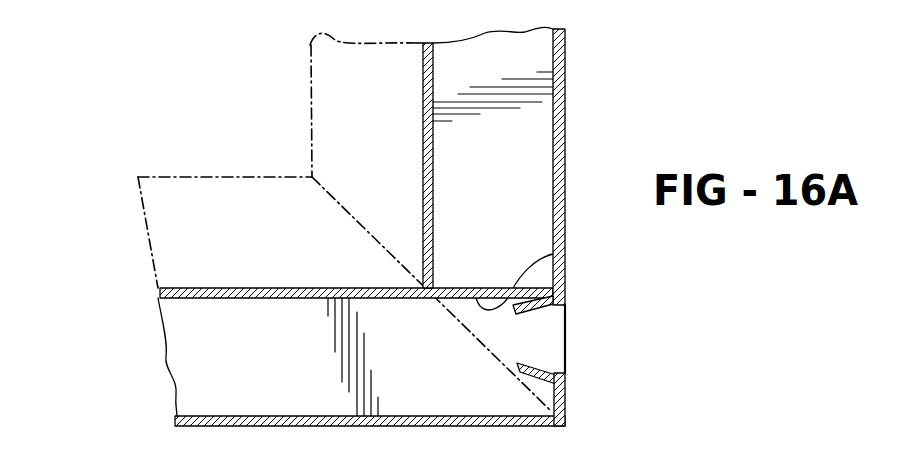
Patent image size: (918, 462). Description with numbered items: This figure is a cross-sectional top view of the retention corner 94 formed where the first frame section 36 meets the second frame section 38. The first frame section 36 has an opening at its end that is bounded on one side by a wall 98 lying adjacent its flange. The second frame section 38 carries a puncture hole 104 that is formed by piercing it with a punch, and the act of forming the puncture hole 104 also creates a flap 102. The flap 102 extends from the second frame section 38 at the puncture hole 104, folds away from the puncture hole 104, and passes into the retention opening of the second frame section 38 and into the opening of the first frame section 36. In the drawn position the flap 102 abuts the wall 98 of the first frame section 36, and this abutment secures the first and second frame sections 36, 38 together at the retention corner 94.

The first frame section 36 is at (230, 362).
The second frame section 38 is at (528, 148).
The retention corner 94 is at (602, 424).
The wall 98 is at (553, 254).
The flap 102 is at (538, 306).
The puncture hole 104 is at (577, 363).